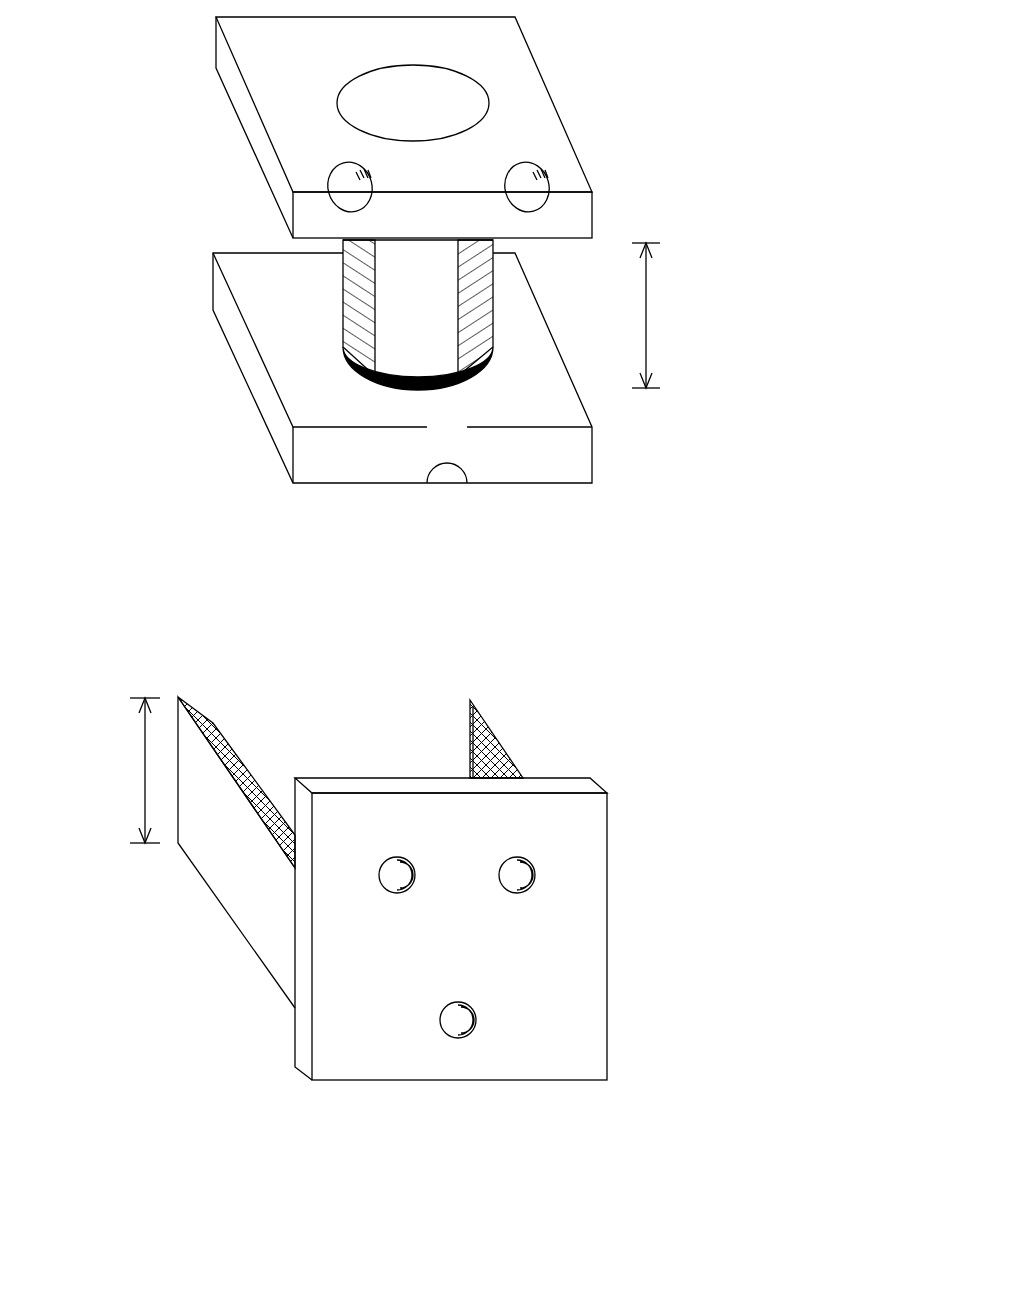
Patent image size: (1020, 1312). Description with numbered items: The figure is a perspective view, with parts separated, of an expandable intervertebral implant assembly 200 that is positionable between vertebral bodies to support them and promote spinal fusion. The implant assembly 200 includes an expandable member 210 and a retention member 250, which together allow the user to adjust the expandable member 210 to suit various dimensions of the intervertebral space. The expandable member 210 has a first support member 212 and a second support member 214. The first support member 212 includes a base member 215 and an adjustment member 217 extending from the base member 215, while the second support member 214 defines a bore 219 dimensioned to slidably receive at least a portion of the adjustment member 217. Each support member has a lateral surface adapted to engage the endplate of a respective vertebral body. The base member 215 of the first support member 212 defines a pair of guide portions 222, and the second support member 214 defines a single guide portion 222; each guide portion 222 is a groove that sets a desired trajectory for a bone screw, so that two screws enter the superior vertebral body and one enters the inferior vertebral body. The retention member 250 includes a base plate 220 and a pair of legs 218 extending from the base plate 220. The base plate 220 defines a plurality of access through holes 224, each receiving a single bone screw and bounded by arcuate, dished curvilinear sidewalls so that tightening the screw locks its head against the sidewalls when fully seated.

The expandable intervertebral implant assembly 200 is at (785, 655).
The expandable member 210 is at (167, 328).
The first support member 212 is at (600, 108).
The second support member 214 is at (257, 387).
The base member 215 is at (572, 215).
The adjustment member 217 is at (343, 285).
The legs 218 is at (237, 865).
The bore 219 is at (495, 365).
The base plate 220 is at (372, 785).
The guide portion 222 is at (342, 180).
The access through holes 224 is at (535, 875).
The retention member 250 is at (225, 1074).